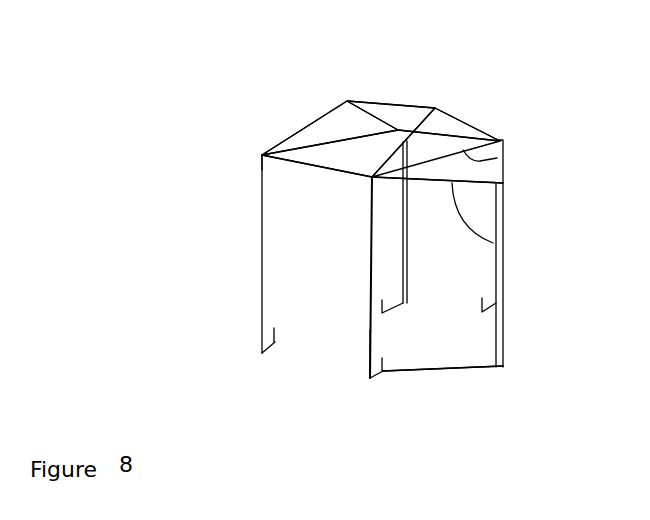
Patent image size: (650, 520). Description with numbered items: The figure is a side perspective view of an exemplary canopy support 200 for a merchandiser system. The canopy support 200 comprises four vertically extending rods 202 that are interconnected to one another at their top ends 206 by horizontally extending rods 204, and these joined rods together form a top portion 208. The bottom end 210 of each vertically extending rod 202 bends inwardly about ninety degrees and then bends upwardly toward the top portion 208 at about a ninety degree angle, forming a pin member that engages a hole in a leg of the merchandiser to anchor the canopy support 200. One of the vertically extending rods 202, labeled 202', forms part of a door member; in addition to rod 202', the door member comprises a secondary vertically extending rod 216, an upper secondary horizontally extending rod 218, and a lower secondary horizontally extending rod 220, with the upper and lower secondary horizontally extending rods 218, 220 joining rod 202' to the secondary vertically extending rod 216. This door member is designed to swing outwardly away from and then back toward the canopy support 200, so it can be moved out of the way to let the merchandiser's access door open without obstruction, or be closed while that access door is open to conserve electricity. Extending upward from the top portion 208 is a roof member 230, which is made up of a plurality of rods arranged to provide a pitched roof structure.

The canopy support 200 is at (462, 70).
The vertically extending rod 202 is at (380, 259).
The vertically extending rod 202' is at (344, 383).
The horizontally extending rod 204 is at (333, 137).
The top end 206 is at (372, 177).
The top portion 208 is at (243, 166).
The bottom end 210 is at (260, 343).
The secondary vertically extending rod 216 is at (505, 353).
The upper secondary horizontally extending rod 218 is at (493, 243).
The lower secondary horizontally extending rod 220 is at (453, 370).
The roof member 230 is at (476, 103).